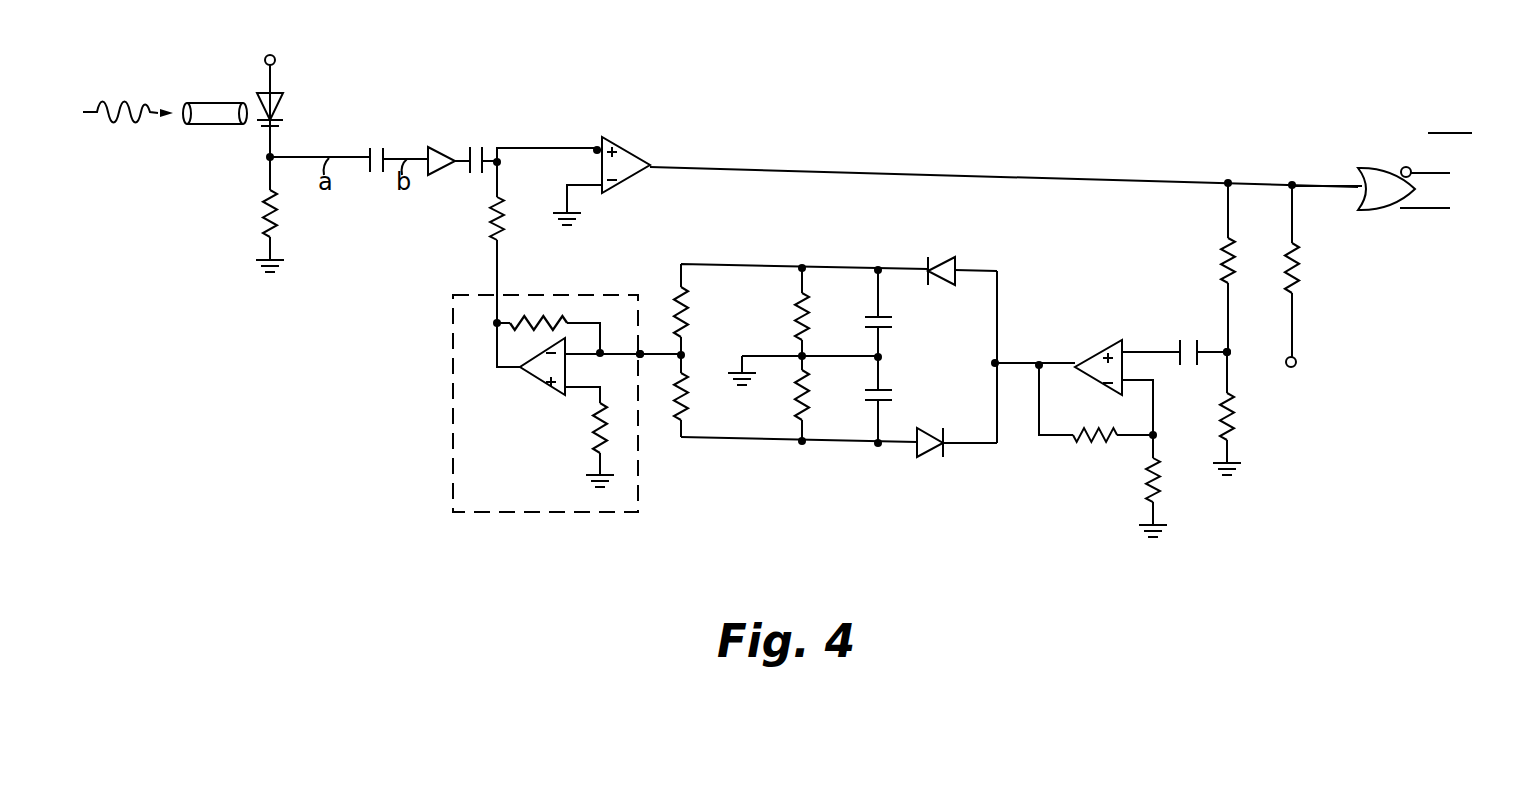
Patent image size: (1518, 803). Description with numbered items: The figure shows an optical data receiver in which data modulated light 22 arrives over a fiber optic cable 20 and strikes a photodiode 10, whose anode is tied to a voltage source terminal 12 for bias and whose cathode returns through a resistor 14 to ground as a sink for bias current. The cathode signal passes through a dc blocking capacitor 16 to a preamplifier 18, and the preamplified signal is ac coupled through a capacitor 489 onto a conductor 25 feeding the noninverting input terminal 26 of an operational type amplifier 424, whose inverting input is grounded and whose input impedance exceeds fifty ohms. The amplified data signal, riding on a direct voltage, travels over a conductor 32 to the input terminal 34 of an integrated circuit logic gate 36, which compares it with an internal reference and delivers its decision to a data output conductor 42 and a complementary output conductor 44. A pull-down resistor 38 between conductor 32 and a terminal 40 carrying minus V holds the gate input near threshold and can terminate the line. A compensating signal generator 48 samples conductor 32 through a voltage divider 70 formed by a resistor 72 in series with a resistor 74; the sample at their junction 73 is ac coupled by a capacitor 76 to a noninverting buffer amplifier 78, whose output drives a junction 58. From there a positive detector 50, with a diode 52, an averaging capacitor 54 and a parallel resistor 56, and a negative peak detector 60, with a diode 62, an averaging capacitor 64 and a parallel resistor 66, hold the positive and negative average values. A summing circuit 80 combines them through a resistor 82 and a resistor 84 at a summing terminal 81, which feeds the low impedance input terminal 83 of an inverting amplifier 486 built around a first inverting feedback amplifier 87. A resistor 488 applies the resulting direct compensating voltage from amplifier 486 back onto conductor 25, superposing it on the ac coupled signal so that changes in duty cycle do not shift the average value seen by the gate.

The data modulated light 22 is at (133, 97).
The fiber optic cable 20 is at (221, 124).
The photodiode 10 is at (283, 100).
The voltage source terminal 12 is at (264, 60).
The resistor 14 is at (262, 215).
The dc blocking capacitor 16 is at (375, 146).
The preamplifier 18 is at (438, 146).
The capacitor 489 is at (477, 146).
The conductor 25 is at (548, 147).
The input terminal 26 is at (594, 146).
The operational type amplifier 424 is at (638, 150).
The conductor 32 is at (858, 171).
The resistor 488 is at (485, 217).
The inverting amplifier 486 is at (525, 479).
The first inverting feedback amplifier 87 is at (539, 382).
The low impedance input terminal 83 is at (643, 352).
The summing terminal 81 is at (670, 357).
The resistor 82 is at (693, 318).
The summing circuit 80 is at (723, 374).
The resistor 84 is at (693, 403).
The resistor 56 is at (795, 315).
The resistor 66 is at (796, 405).
The averaging capacitor 54 is at (895, 324).
The averaging capacitor 64 is at (893, 399).
The diode 52 is at (936, 256).
The diode 62 is at (926, 459).
The positive detector 50 is at (895, 246).
The negative peak detector 60 is at (865, 503).
The compensating signal generator 48 is at (753, 547).
The junction 58 is at (1010, 361).
The noninverting buffer amplifier 78 is at (1097, 493).
The capacitor 76 is at (1187, 340).
The resistor 72 is at (1224, 267).
The junction 73 is at (1231, 352).
The resistor 74 is at (1231, 419).
The pull-down resistor 38 is at (1299, 268).
The terminal 40 is at (1297, 361).
The voltage divider 70 is at (1322, 436).
The integrated circuit logic gate 36 is at (1380, 170).
The input terminal 34 is at (1356, 182).
The data output conductor 42 is at (1399, 210).
The output conductor 44 is at (1433, 178).